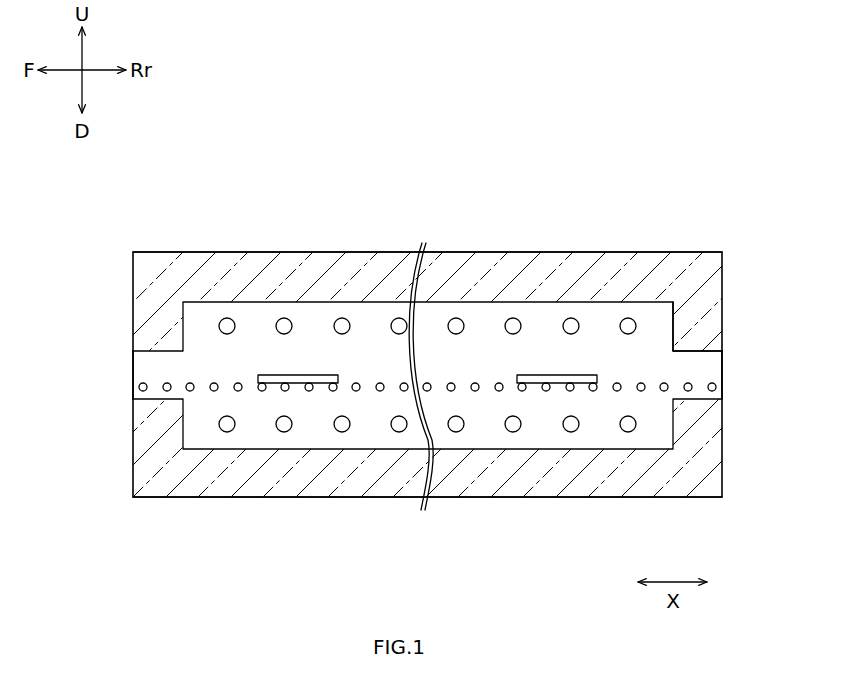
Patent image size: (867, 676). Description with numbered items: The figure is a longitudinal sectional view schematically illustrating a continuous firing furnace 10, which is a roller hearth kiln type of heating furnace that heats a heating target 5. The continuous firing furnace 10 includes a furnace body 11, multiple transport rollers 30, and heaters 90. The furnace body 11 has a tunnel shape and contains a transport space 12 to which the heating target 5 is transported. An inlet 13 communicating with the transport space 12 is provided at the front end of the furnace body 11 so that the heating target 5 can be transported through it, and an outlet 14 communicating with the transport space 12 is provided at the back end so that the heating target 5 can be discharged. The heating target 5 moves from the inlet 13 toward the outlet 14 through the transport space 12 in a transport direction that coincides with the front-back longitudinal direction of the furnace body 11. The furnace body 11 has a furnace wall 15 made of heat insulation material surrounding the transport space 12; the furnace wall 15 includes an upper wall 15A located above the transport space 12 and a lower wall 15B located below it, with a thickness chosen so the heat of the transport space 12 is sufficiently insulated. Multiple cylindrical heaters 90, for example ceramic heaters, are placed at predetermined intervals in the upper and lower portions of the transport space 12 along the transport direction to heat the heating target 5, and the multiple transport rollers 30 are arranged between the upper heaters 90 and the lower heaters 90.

The continuous firing furnace 10 is at (190, 222).
The furnace body 11 is at (683, 251).
The transport space 12 is at (663, 335).
The inlet 13 is at (133, 372).
The outlet 14 is at (722, 369).
The furnace wall 15 is at (480, 252).
The upper wall 15A is at (403, 262).
The lower wall 15B is at (390, 490).
The heating target 5 is at (328, 375).
The heaters 90 is at (228, 318).
The transport rollers 30 is at (570, 392).